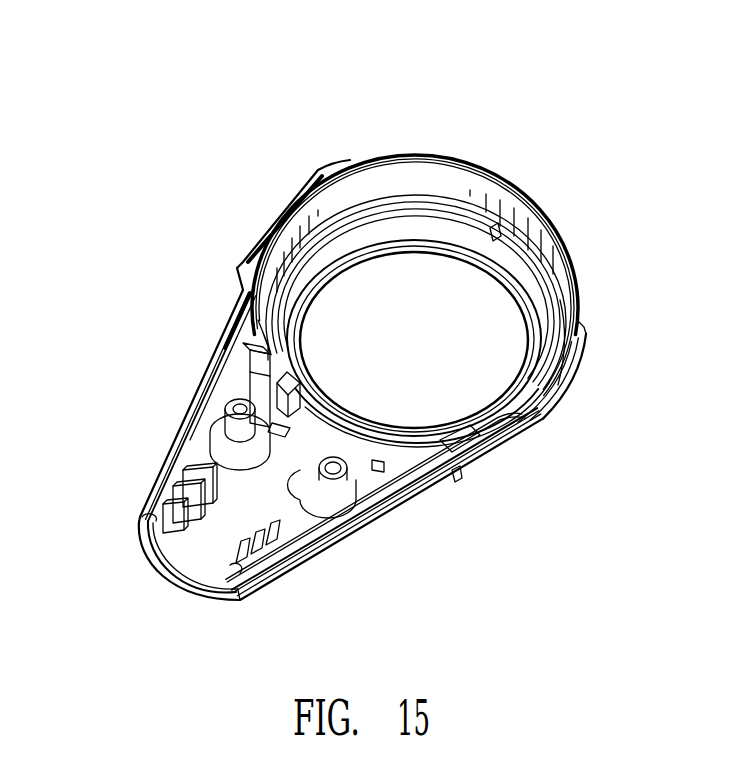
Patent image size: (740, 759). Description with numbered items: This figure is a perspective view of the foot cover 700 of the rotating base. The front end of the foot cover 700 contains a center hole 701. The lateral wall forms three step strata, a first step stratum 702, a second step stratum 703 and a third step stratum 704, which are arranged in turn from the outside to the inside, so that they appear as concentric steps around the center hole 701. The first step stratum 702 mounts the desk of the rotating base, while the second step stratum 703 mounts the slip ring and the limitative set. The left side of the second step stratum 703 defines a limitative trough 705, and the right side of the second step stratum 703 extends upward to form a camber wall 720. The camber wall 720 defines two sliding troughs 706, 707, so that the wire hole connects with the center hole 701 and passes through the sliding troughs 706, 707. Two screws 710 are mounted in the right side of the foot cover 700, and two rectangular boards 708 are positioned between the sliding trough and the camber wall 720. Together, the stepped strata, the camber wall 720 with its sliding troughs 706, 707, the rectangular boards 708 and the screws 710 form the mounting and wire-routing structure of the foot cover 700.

The foot cover 700 is at (79, 74).
The center hole 701 is at (402, 272).
The first step stratum 702 is at (330, 264).
The second step stratum 703 is at (300, 272).
The third step stratum 704 is at (534, 258).
The limitative trough 705 is at (492, 234).
The sliding trough 706 is at (308, 435).
The sliding trough 707 is at (266, 358).
The rectangular board 708 is at (279, 404).
The screw 710 is at (243, 410).
The camber wall 720 is at (262, 345).